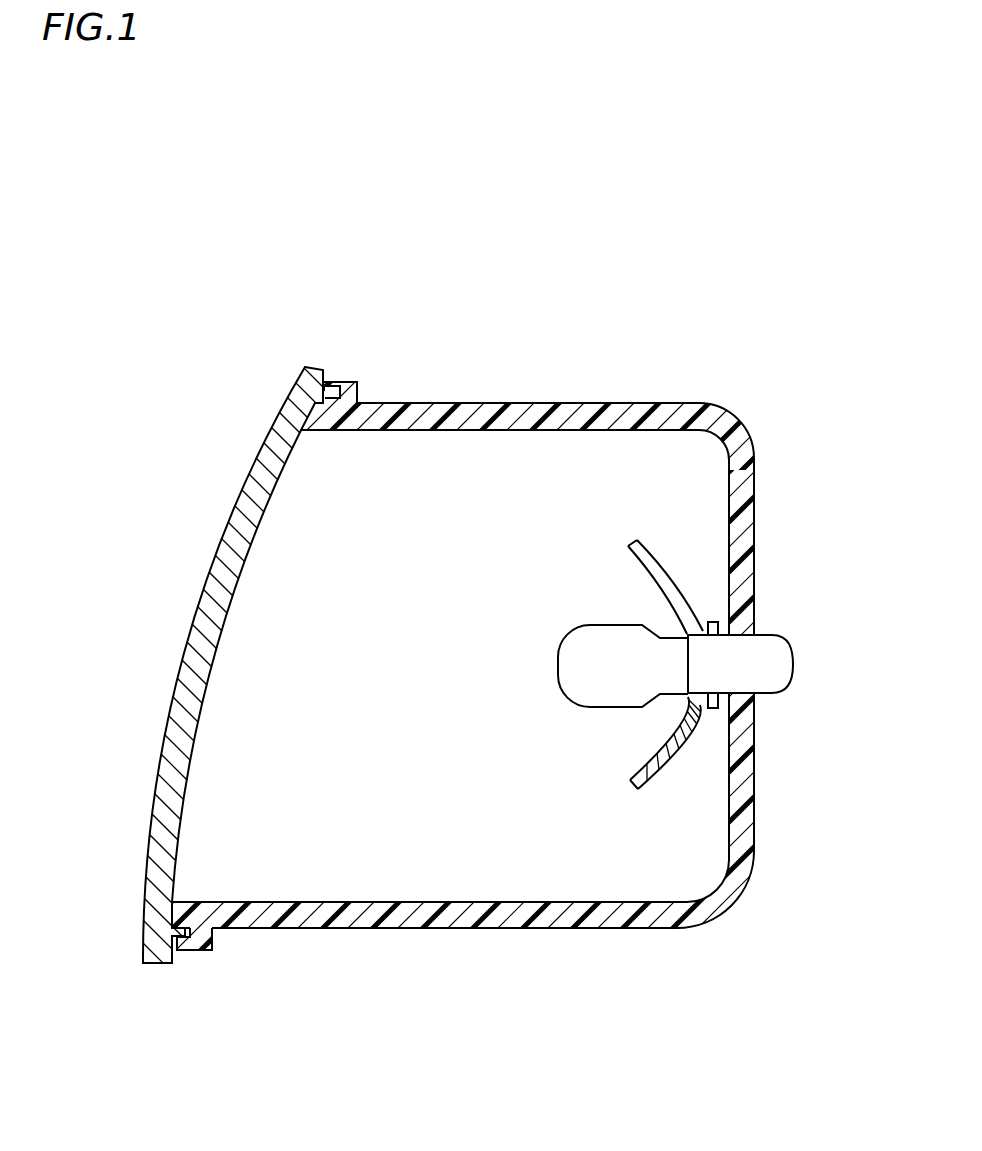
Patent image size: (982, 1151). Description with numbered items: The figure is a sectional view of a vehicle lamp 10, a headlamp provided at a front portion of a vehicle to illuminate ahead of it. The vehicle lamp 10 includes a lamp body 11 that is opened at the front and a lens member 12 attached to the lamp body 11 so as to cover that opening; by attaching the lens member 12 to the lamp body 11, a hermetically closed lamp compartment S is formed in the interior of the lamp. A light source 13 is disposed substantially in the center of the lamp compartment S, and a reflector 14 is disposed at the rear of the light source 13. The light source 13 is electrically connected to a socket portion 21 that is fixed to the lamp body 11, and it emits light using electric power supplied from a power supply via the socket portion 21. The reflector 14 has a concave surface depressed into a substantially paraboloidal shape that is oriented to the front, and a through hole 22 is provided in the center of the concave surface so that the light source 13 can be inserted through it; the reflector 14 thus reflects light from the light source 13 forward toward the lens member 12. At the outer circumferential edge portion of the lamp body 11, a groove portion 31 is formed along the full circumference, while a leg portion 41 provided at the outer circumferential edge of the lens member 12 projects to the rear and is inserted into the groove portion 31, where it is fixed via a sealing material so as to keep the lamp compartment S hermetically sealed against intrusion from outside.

The vehicle lamp 10 is at (587, 263).
The lamp body 11 is at (749, 452).
The lens member 12 is at (258, 483).
The light source 13 is at (597, 690).
The reflector 14 is at (640, 571).
The socket portion 21 is at (767, 673).
The through hole 22 is at (747, 642).
The groove portion 31 is at (206, 935).
The leg portion 41 is at (186, 937).
The lamp compartment S is at (358, 818).